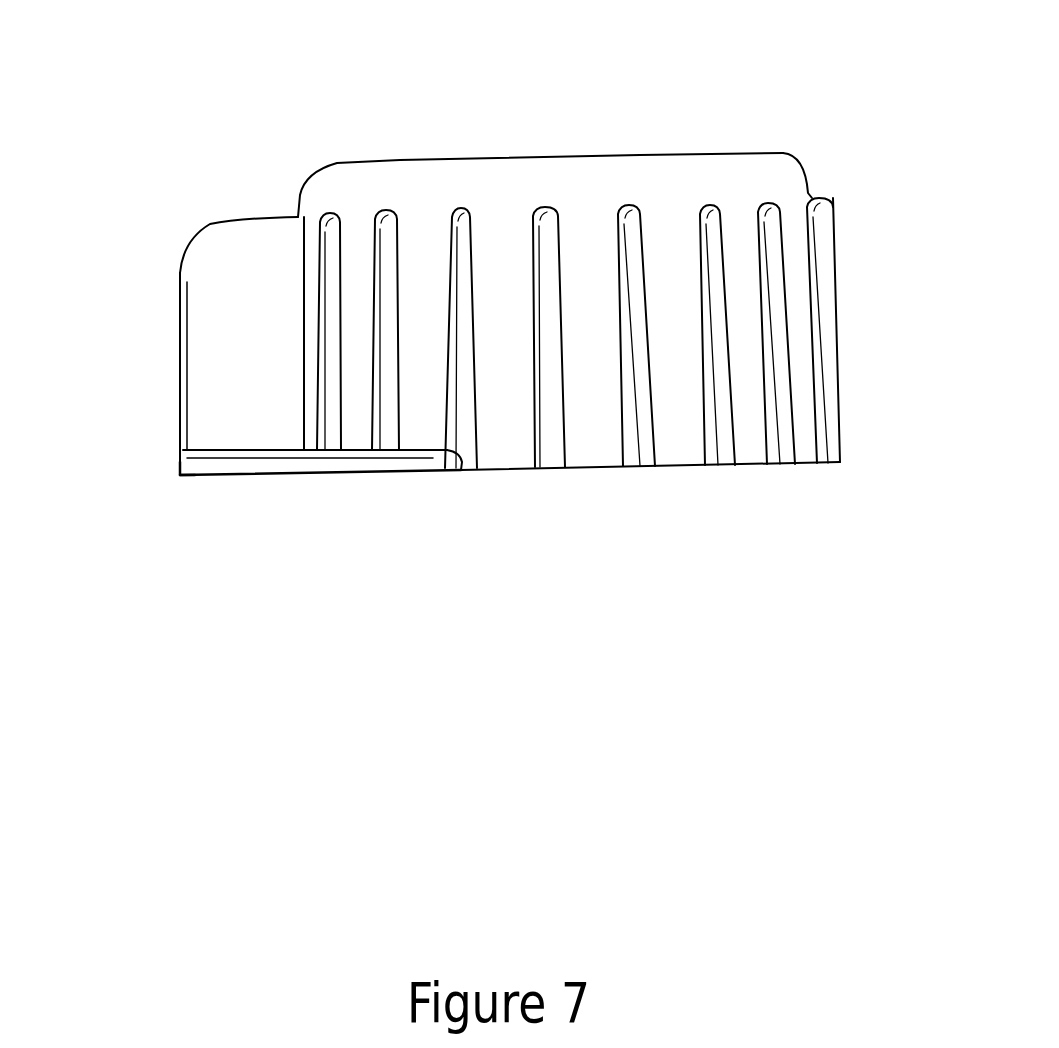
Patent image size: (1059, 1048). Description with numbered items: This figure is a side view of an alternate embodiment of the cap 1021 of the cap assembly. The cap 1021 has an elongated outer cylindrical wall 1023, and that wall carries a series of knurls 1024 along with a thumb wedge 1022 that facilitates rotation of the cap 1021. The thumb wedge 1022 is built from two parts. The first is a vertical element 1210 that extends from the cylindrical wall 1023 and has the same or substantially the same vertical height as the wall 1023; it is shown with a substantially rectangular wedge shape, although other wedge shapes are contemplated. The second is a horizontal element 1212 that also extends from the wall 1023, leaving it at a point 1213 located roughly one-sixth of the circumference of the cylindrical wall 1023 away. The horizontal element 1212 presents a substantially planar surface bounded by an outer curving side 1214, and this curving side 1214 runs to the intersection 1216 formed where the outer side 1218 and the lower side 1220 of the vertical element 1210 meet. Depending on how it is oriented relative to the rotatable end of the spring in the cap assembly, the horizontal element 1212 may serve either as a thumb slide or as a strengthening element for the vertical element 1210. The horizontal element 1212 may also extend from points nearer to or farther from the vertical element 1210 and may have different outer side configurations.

The cap 1021 is at (562, 180).
The thumb wedge 1022 is at (237, 272).
The outer cylindrical wall 1023 is at (670, 265).
The knurls 1024 is at (717, 342).
The vertical element 1210 is at (202, 328).
The outer side 1218 is at (193, 400).
The intersection 1216 is at (187, 470).
The lower side 1220 is at (218, 470).
The horizontal element 1212 is at (328, 465).
The outer curving side 1214 is at (410, 463).
The point 1213 is at (460, 470).